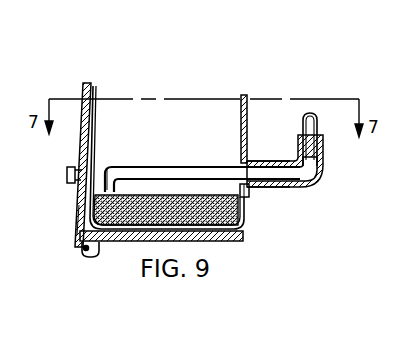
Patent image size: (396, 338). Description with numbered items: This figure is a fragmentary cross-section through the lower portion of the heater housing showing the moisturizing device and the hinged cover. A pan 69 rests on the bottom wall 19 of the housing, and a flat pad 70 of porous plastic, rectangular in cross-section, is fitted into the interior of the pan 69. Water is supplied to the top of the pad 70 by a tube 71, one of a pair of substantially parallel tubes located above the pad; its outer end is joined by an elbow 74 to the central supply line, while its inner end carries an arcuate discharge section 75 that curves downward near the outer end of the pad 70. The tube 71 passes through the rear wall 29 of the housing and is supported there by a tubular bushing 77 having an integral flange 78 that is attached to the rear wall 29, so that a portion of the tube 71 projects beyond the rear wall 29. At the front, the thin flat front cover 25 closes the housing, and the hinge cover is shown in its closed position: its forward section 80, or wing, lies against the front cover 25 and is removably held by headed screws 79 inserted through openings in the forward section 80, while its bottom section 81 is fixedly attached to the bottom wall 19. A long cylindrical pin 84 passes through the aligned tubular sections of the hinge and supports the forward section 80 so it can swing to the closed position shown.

The bottom wall 19 is at (210, 238).
The front cover 25 is at (84, 82).
The rear wall 29 is at (244, 94).
The pan 69 is at (245, 230).
The pad 70 is at (198, 196).
The tube 71 is at (153, 168).
The elbow 74 is at (318, 182).
The arcuate discharge section 75 is at (111, 168).
The tubular bushing 77 is at (247, 158).
The flange 78 is at (249, 192).
The screws 79 is at (67, 176).
The forward section 80 is at (73, 215).
The bottom section 81 is at (100, 250).
The cylindrical pin 84 is at (82, 251).